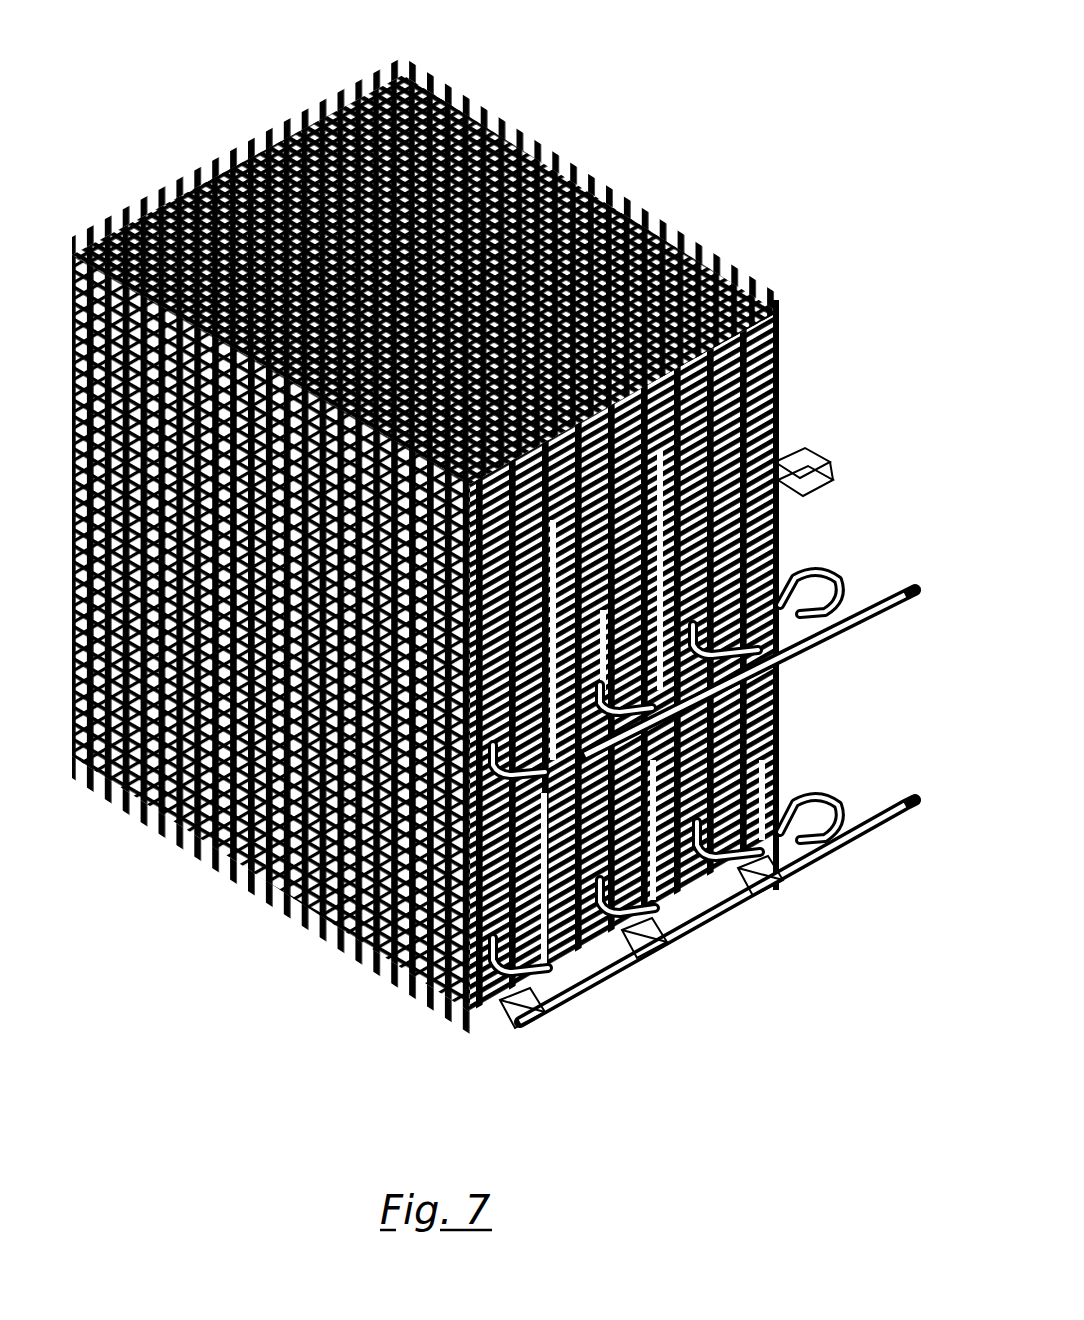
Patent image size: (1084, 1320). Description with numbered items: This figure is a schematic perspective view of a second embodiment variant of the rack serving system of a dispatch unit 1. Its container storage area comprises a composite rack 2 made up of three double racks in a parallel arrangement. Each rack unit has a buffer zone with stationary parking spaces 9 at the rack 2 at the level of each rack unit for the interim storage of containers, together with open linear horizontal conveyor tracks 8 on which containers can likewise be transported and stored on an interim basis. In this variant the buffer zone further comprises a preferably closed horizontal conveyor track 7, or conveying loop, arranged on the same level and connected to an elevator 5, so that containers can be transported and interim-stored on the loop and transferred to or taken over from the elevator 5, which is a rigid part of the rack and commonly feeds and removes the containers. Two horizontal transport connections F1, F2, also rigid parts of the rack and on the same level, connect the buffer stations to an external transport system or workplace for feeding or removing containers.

The dispatch unit 1 is at (742, 152).
The composite rack 2 is at (390, 97).
The elevator 5 is at (738, 895).
The closed horizontal conveyor track 7 is at (826, 575).
The open linear horizontal conveyor track 8 is at (822, 472).
The stationary parking space 9 is at (430, 1002).
The horizontal transport connection F1 is at (872, 823).
The horizontal transport connection F2 is at (880, 616).